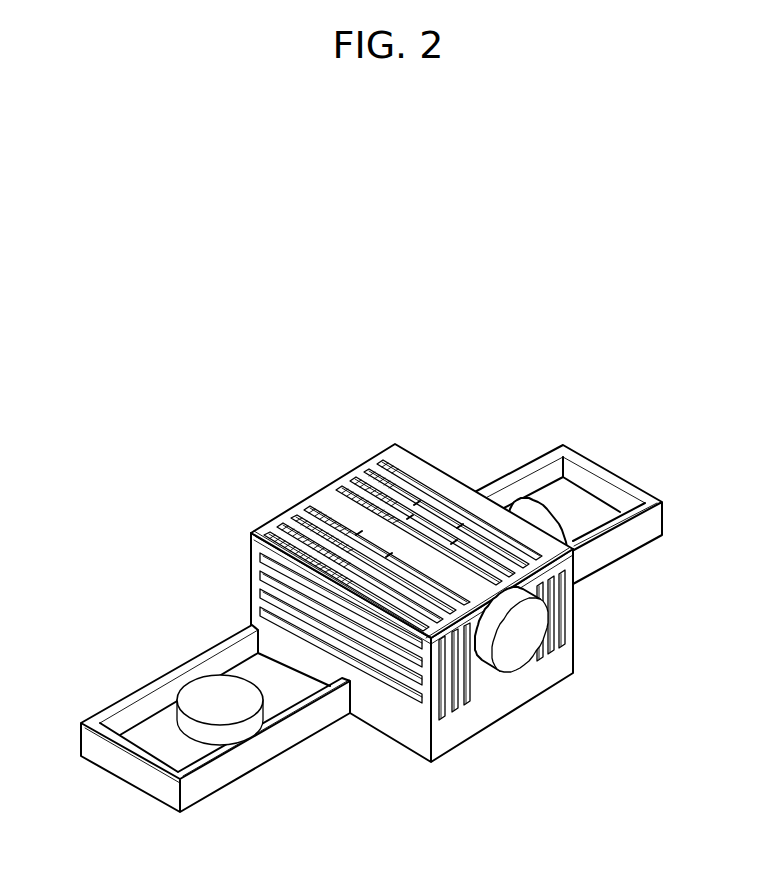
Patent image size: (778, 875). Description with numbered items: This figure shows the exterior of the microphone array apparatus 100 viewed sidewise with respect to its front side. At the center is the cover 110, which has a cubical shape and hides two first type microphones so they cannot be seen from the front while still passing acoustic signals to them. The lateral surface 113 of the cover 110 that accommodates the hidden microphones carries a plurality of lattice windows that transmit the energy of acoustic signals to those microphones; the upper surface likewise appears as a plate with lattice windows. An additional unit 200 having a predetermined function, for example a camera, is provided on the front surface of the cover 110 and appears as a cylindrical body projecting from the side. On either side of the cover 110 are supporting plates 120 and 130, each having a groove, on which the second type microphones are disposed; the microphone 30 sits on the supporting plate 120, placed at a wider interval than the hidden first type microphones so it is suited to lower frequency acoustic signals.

The microphone array apparatus 100 is at (517, 360).
The cover 110 is at (422, 461).
The lateral surface 113 is at (408, 733).
The supporting plate 120 is at (243, 763).
The supporting plate 130 is at (627, 545).
The additional unit 200 is at (518, 658).
The microphone 30 is at (198, 690).